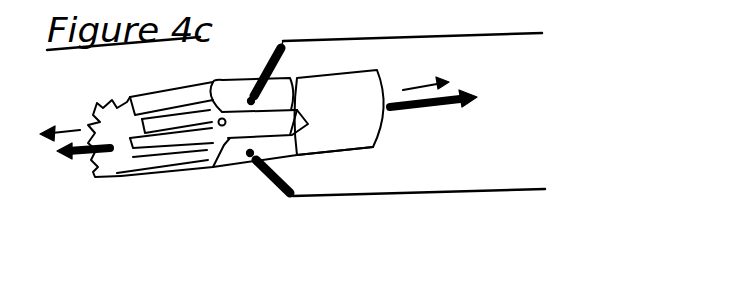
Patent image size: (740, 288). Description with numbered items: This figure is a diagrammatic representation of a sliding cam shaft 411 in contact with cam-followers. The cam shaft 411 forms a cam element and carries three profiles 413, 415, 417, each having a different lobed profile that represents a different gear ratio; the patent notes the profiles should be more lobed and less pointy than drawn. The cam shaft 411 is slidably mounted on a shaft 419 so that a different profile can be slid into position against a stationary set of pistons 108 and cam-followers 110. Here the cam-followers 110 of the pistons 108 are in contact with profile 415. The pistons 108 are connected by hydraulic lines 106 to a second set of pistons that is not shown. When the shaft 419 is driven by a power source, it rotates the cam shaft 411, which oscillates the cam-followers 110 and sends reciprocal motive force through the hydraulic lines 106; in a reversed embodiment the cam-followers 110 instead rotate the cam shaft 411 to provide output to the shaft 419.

The hydraulic lines 106 is at (498, 38).
The pistons 108 is at (276, 53).
The cam-followers 110 is at (249, 99).
The cam shaft 411 is at (372, 71).
The profile 413 is at (123, 180).
The profile 415 is at (283, 80).
The profile 417 is at (352, 138).
The shaft 419 is at (450, 107).